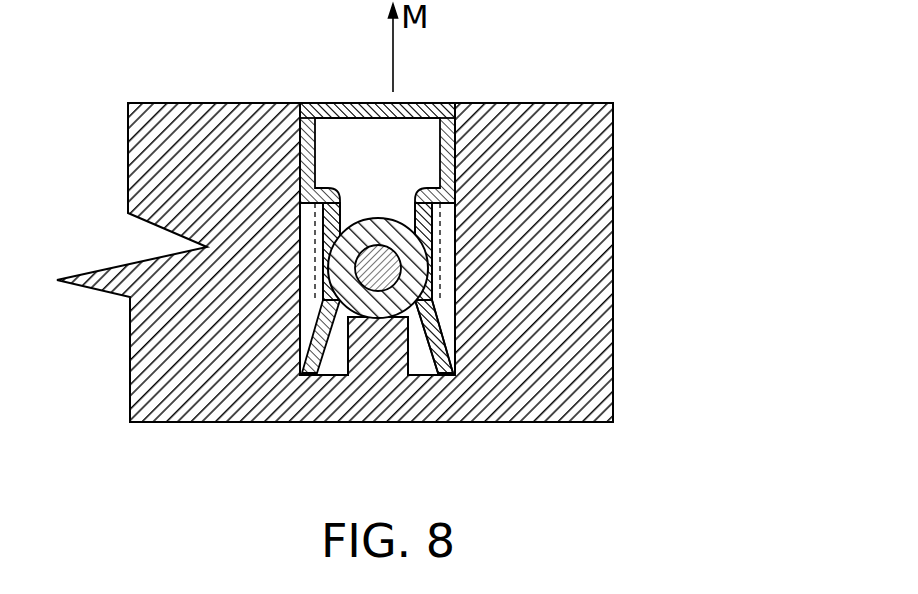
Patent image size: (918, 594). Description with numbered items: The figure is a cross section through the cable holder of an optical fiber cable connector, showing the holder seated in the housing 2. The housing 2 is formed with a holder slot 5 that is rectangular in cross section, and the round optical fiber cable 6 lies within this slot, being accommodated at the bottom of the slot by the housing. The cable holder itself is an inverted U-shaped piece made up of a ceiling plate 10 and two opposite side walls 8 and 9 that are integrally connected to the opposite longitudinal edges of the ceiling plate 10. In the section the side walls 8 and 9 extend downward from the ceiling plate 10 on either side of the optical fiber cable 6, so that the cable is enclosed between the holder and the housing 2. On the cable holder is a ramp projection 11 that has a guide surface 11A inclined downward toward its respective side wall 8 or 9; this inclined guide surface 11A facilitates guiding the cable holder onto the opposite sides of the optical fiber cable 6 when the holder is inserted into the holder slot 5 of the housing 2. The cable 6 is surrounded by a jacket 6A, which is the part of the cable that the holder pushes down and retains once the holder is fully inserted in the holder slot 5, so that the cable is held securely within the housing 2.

The housing 2 is at (201, 101).
The holder slot 5 is at (355, 140).
The optical fiber cable 6 is at (386, 312).
The jacket 6A is at (374, 312).
The side wall 8 is at (312, 102).
The side wall 9 is at (460, 103).
The ceiling plate 10 is at (365, 102).
The ramp projection 11 is at (417, 220).
The guide surface 11A is at (419, 316).